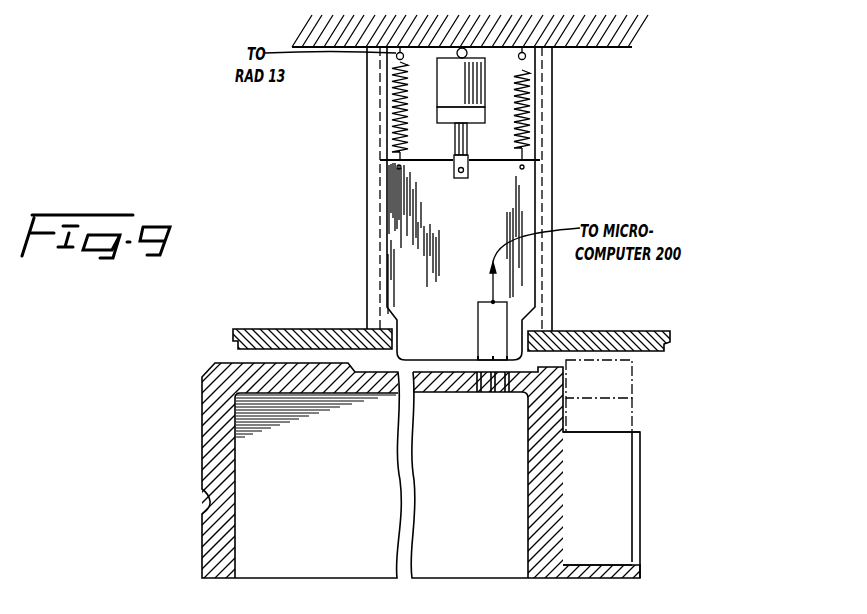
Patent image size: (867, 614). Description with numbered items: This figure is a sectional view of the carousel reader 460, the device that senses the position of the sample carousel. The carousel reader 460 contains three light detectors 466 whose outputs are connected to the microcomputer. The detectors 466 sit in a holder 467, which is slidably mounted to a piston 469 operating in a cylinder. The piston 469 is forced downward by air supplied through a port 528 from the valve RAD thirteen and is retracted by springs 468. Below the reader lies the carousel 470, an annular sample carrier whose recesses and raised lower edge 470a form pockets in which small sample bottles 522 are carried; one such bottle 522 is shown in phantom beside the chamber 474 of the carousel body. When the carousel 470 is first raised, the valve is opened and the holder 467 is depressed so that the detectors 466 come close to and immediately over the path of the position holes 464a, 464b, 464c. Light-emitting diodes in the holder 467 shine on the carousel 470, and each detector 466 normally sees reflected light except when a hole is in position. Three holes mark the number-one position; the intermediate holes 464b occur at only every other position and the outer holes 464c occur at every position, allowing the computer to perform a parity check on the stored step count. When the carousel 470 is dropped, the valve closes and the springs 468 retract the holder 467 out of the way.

The carousel reader 460 is at (355, 313).
The hole 464a is at (480, 392).
The intermediate hole 464b is at (492, 392).
The outer hole 464c is at (513, 383).
The light detector 466 is at (507, 358).
The holder 467 is at (404, 197).
The spring 468 is at (527, 133).
The piston 469 is at (470, 143).
The carousel 470 is at (243, 462).
The raised lower edge 470a is at (635, 560).
The reservoir chamber 474 is at (622, 513).
The sample bottle 522 is at (625, 413).
The port 528 is at (467, 56).